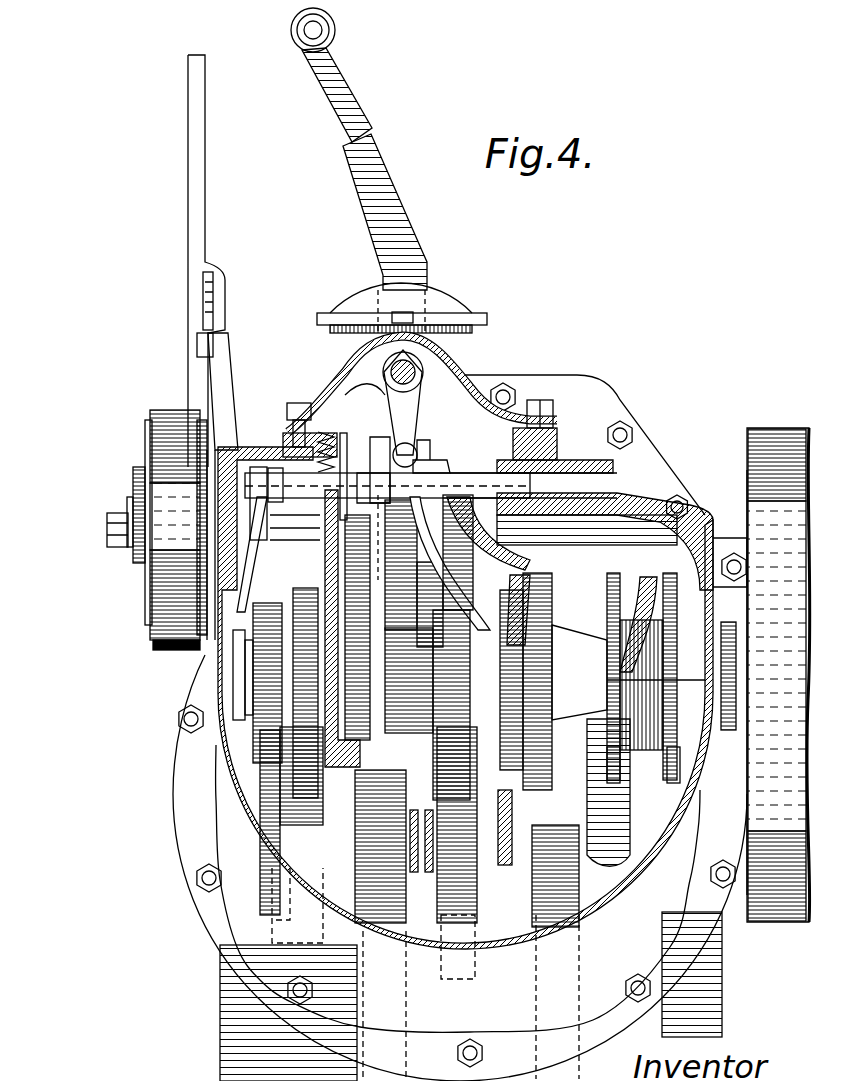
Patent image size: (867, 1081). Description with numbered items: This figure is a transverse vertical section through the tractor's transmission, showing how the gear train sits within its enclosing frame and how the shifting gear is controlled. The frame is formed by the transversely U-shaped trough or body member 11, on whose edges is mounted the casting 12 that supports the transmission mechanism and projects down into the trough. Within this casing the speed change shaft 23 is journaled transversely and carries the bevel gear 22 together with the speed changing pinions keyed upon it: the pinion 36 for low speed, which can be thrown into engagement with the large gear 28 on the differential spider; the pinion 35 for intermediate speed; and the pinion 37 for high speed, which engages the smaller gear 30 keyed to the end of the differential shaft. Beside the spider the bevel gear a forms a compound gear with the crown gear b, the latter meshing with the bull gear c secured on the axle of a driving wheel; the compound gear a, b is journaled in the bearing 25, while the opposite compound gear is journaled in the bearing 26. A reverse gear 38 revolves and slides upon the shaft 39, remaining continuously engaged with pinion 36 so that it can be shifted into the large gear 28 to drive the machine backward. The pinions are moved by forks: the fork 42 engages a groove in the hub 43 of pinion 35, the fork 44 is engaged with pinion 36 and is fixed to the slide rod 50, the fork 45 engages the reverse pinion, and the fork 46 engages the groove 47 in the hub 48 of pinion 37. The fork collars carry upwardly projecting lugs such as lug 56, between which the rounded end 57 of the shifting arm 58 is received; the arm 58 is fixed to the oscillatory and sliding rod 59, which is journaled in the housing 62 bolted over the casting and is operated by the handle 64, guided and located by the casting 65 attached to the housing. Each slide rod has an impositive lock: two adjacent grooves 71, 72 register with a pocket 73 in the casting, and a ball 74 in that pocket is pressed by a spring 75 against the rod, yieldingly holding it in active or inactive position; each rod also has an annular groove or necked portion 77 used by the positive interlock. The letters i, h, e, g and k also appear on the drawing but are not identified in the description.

The brake rod i is at (188, 180).
The handle 64 is at (405, 197).
The casting 65 is at (440, 292).
The housing 62 is at (468, 352).
The shifting rod 59 is at (383, 370).
The shifting arm 58 is at (372, 393).
The reverse shifting fork 45 is at (440, 410).
The rounded end 57 is at (412, 446).
The lug 56 is at (428, 478).
The reverse gear 38 is at (432, 495).
The slide rod 50 is at (458, 492).
The pocket 73 is at (290, 430).
The spring 75 is at (337, 445).
The annular groove 77 is at (556, 440).
The casting 12 is at (640, 490).
The groove 72 is at (387, 526).
The ball 74 is at (272, 498).
The groove 71 is at (263, 554).
The brake drum h is at (160, 412).
The hub nut e is at (107, 525).
The drum flange g is at (156, 618).
The fly wheel k is at (779, 427).
The shaft 39 is at (330, 582).
The speed change shaft 23 is at (265, 700).
The groove 47 is at (330, 705).
The pinion 36 is at (412, 570).
The pinion 37 is at (300, 760).
The fork 42 is at (522, 562).
The pinion 35 is at (530, 592).
The bevel gear 22 is at (553, 622).
The hub 43 is at (535, 660).
The fork 46 is at (233, 655).
The hub 48 is at (245, 662).
The gear 30 is at (260, 880).
The bearing 26 is at (290, 840).
The fork 44 is at (460, 868).
The trough member 11 is at (260, 945).
The crown gear b is at (392, 850).
The large gear 28 is at (440, 920).
The bevel gear a is at (433, 857).
The bull gear c is at (392, 920).
The bearing 25 is at (469, 888).